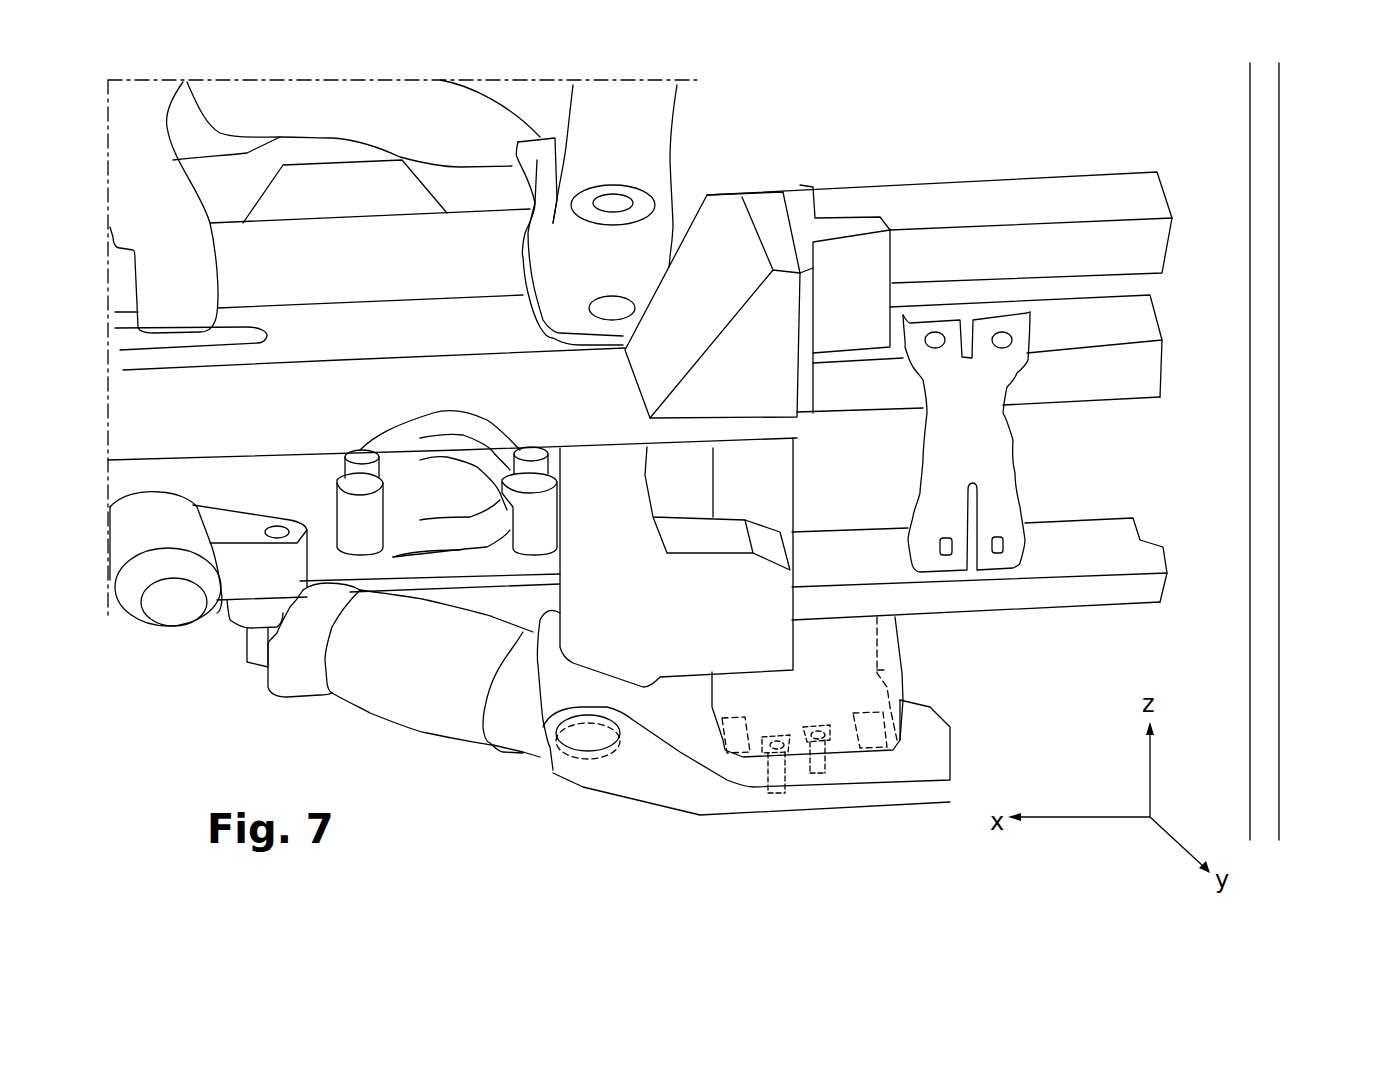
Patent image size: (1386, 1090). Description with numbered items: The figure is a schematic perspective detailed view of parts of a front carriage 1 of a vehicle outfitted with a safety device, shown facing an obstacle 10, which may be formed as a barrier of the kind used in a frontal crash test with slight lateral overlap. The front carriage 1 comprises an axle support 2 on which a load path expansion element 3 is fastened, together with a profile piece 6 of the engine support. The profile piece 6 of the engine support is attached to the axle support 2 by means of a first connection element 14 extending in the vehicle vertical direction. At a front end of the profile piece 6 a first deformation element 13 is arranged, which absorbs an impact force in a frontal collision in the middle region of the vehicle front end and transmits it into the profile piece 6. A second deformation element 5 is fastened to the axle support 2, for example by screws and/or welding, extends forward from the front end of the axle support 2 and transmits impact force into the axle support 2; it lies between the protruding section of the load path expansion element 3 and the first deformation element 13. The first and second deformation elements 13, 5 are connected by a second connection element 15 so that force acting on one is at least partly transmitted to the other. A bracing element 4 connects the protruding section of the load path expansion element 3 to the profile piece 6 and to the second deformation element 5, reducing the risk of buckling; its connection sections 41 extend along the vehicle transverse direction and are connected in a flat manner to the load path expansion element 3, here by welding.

The front carriage 1 is at (960, 151).
The axle support 2 is at (243, 610).
The load path expansion element 3 is at (917, 747).
The bracing element 4 is at (877, 648).
The second deformation element 5 is at (1070, 547).
The profile piece of the engine support 6 is at (153, 405).
The obstacle 10 is at (1262, 707).
The first deformation element 13 is at (1130, 387).
The first connection element 14 is at (573, 613).
The second connection element 15 is at (983, 433).
The connection sections 41 is at (740, 747).